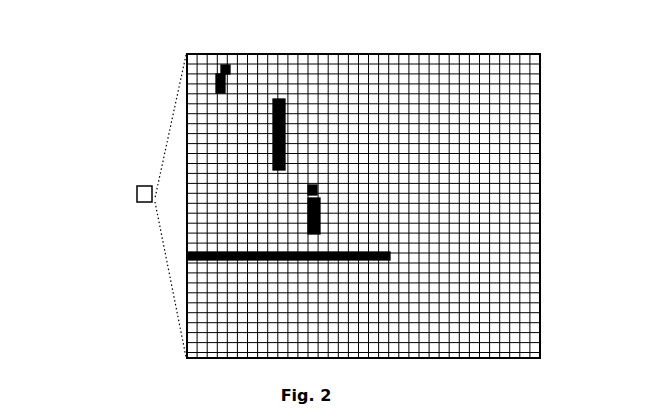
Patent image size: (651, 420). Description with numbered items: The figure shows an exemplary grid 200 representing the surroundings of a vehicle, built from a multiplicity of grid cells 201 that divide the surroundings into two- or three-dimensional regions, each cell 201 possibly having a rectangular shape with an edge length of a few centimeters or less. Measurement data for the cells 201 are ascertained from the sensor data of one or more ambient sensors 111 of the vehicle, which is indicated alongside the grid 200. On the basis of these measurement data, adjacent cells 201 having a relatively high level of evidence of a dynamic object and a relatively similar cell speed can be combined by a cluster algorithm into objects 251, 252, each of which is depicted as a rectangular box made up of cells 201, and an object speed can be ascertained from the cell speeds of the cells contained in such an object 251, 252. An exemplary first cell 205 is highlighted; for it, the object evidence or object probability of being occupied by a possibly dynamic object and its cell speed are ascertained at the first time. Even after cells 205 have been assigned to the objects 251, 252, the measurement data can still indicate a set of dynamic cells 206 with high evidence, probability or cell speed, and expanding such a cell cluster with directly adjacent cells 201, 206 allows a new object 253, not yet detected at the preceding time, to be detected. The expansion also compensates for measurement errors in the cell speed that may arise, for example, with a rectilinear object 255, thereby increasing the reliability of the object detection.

The grid 200 is at (178, 52).
The grid cell 201 is at (533, 263).
The ambient sensor 111 is at (133, 178).
The dynamic cell 206 is at (217, 58).
The new object 253 is at (208, 73).
The object 252 is at (265, 108).
The first cell 205 is at (300, 182).
The object 251 is at (300, 215).
The rectilinear object 255 is at (180, 249).